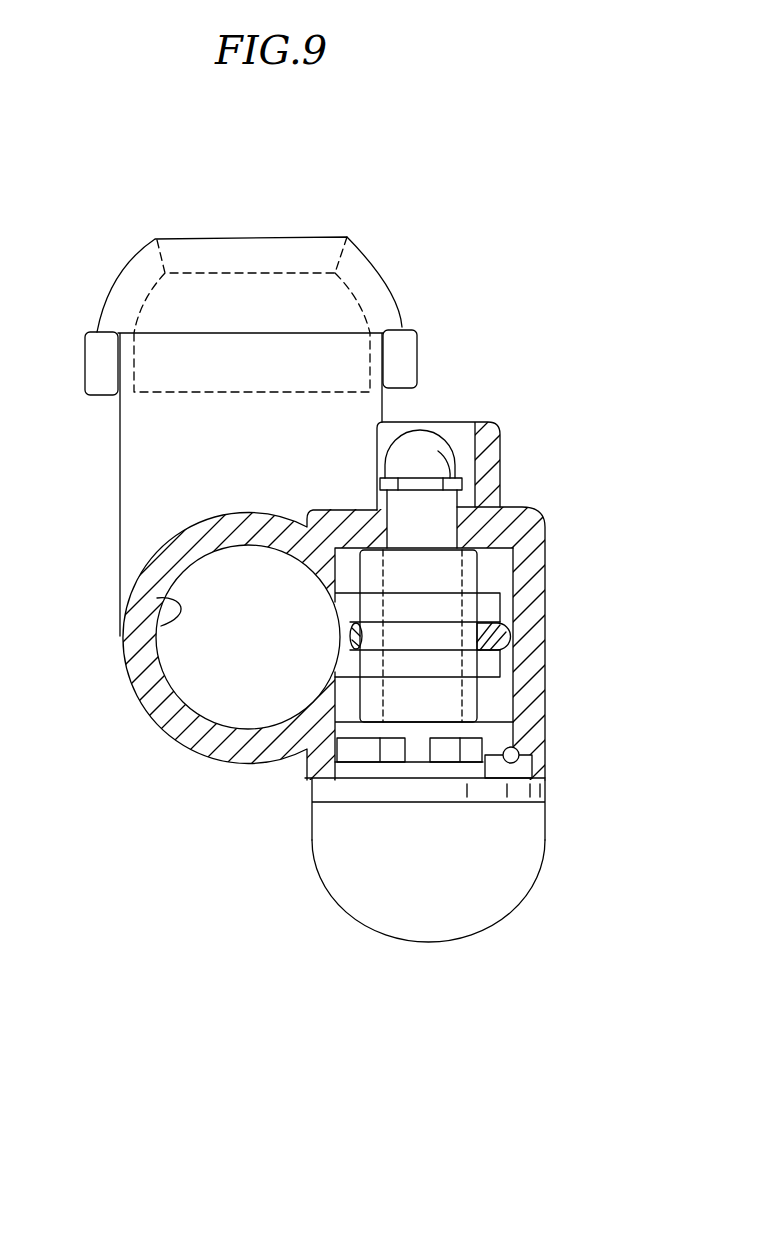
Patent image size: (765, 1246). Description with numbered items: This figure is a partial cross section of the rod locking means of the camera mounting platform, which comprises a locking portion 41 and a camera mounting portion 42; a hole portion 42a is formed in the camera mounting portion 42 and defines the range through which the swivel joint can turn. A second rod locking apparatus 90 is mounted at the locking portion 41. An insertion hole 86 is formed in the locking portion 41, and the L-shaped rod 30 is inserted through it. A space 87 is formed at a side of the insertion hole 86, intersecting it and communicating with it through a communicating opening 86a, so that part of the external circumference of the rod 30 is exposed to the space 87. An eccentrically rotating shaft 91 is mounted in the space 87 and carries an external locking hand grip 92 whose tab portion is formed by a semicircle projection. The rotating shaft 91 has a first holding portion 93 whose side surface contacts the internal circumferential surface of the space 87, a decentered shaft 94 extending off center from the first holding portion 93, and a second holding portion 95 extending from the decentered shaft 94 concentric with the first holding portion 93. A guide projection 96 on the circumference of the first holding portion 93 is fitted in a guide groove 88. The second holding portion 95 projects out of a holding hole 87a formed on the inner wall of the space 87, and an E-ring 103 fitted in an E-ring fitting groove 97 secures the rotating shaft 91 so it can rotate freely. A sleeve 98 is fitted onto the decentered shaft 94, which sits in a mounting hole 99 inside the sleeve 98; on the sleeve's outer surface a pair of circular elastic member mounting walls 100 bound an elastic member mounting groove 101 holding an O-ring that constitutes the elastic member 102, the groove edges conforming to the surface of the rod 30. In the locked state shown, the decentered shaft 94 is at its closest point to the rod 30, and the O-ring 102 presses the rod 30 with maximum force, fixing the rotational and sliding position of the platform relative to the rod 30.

The rod 30 is at (207, 690).
The locking portion 41 is at (535, 613).
The camera mounting portion 42 is at (97, 385).
The hole portion 42a is at (178, 238).
The insertion hole 86 is at (125, 635).
The communicating opening 86a is at (323, 597).
The space 87 is at (497, 700).
The holding hole 87a is at (385, 533).
The guide groove 88 is at (522, 750).
The rod locking apparatus 90 is at (292, 833).
The rotating shaft 91 is at (387, 890).
The locking hand grip 92 is at (513, 837).
The first holding portion 93 is at (497, 728).
The decentered shaft 94 is at (547, 521).
The second holding portion 95 is at (502, 453).
The guide projection 96 is at (530, 767).
The E-ring fitting groove 97 is at (502, 476).
The sleeve 98 is at (482, 665).
The mounting hole 99 is at (383, 585).
The elastic member mounting walls 100 is at (482, 607).
The elastic member mounting groove 101 is at (412, 650).
The elastic member 102 is at (507, 640).
The E-ring 103 is at (385, 440).